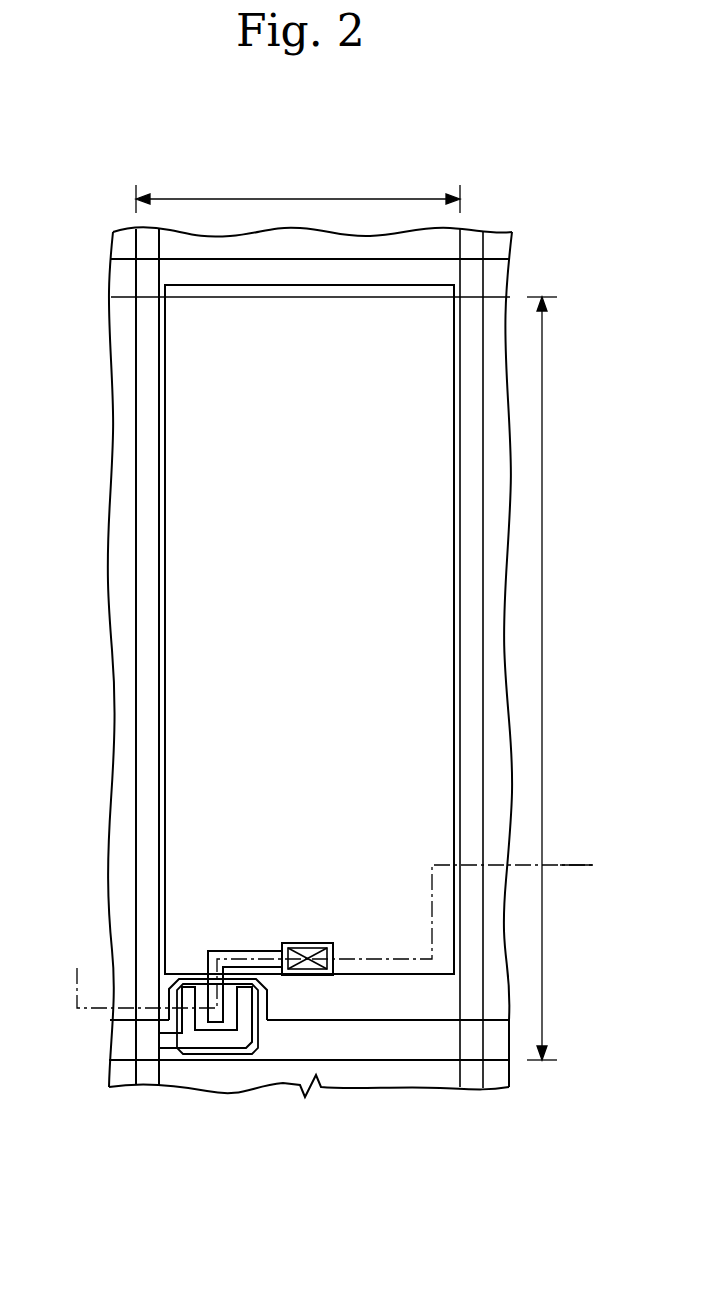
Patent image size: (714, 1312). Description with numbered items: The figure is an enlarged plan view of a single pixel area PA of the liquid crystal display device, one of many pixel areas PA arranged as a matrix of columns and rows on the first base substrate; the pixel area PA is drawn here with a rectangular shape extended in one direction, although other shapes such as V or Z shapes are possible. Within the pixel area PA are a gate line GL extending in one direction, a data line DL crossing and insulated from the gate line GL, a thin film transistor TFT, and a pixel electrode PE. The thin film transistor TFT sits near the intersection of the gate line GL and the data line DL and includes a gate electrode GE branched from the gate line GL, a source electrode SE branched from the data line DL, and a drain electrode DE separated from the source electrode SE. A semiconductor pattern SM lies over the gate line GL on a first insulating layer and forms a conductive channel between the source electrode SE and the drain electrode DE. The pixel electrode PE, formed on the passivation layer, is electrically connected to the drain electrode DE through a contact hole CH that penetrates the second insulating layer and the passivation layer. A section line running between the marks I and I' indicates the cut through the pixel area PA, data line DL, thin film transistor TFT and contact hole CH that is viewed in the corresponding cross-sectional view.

The pixel electrode PE is at (192, 788).
The data line DL is at (146, 848).
The gate line GL is at (399, 1048).
The contact hole CH is at (306, 943).
The thin film transistor TFT is at (229, 1076).
The semiconductor pattern SM is at (183, 1053).
The drain electrode DE is at (212, 1015).
The source electrode SE is at (240, 1022).
The gate electrode GE is at (265, 1022).
The pixel area PA is at (355, 618).
The section line I is at (332, 936).
The section line I' is at (586, 866).